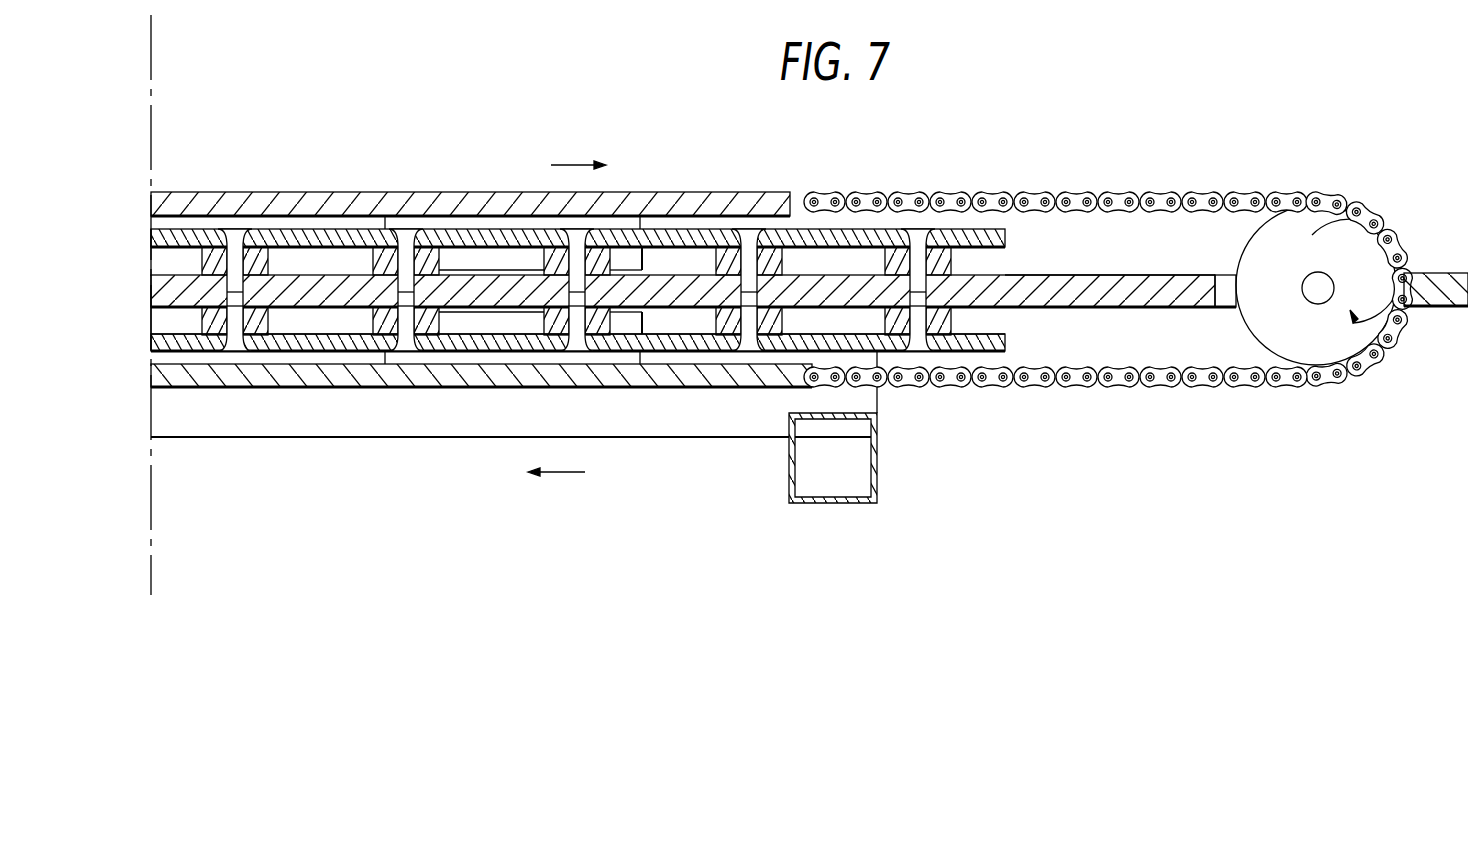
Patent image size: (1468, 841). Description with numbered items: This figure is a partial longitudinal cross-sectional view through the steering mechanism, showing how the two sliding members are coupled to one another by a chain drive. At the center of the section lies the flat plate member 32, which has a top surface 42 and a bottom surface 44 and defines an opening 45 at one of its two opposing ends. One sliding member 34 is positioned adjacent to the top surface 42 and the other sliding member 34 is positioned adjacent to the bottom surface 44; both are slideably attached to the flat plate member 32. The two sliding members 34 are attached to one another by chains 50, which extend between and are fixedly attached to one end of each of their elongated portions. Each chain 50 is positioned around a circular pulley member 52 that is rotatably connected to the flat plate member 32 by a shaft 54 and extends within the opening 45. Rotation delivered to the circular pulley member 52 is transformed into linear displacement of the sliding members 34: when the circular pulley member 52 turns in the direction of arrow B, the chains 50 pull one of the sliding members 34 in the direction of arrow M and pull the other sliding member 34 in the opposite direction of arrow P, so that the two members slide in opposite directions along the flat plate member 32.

The flat plate member 32 is at (1122, 275).
The sliding member 34 is at (341, 192).
The top surface 42 is at (1047, 275).
The bottom surface 44 is at (1075, 306).
The opening 45 is at (1420, 274).
The chain 50 is at (1189, 192).
The circular pulley member 52 is at (1250, 327).
The shaft 54 is at (1315, 288).
The arrow B is at (1348, 271).
The arrow M is at (568, 167).
The arrow P is at (569, 471).